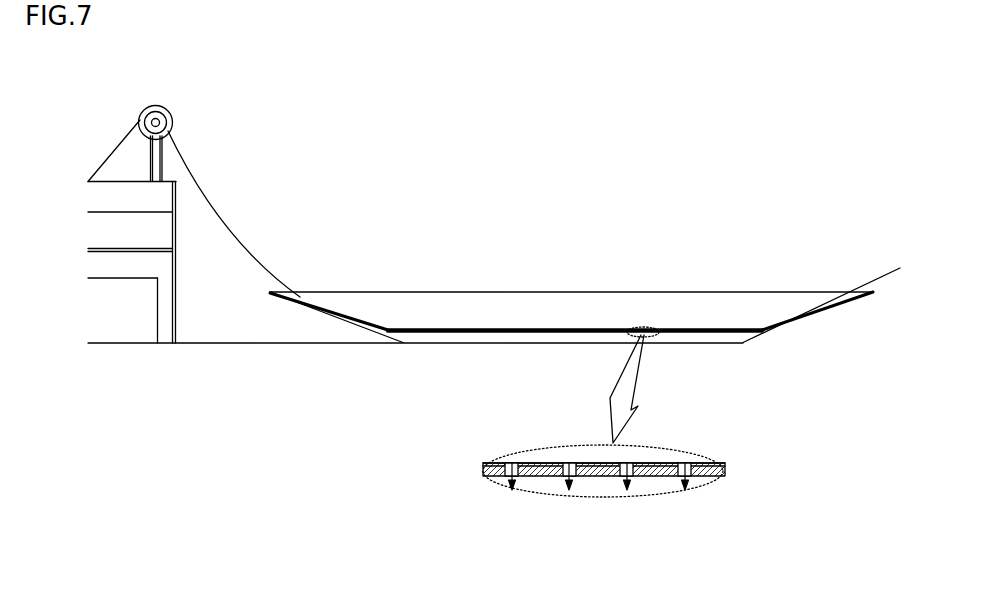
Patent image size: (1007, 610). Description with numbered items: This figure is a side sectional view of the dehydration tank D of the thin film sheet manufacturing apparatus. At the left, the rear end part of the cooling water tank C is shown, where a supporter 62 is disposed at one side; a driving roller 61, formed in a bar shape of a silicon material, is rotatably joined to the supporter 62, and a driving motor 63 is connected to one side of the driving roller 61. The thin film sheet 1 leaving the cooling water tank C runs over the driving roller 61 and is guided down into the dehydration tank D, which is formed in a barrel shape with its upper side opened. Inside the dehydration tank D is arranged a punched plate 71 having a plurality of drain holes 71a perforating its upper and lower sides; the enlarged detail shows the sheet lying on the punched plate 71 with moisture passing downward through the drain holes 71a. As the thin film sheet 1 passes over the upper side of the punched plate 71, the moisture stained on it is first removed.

The thin film sheet 1 is at (102, 155).
The driving roller 61 is at (178, 130).
The supporter 62 is at (163, 158).
The driving motor 63 is at (146, 106).
The punched plate 71 is at (573, 330).
The drain holes 71a is at (515, 483).
The cooling water tank C is at (176, 232).
The dehydration tank D is at (505, 292).